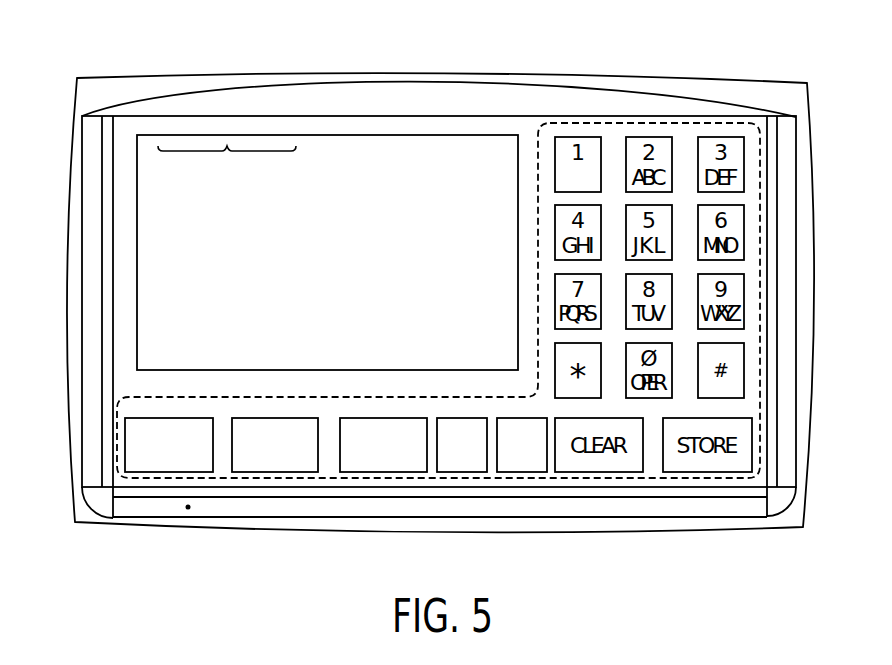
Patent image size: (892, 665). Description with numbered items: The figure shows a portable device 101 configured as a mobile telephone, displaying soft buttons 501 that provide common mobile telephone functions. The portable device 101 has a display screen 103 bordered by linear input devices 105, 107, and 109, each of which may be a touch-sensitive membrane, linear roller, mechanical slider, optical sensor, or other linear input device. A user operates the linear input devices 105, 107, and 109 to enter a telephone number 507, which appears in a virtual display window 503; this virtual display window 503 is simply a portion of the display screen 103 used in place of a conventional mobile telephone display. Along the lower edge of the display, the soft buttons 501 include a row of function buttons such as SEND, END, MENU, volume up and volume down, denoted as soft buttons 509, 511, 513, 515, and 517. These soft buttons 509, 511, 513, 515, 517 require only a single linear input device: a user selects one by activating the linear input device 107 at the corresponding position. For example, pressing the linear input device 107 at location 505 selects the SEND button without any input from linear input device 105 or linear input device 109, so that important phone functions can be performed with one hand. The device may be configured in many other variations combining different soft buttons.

The portable device 101 is at (633, 98).
The display screen 103 is at (125, 382).
The linear input device 105 is at (95, 258).
The linear input device 107 is at (342, 508).
The linear input device 109 is at (786, 343).
The soft buttons 501 is at (600, 482).
The virtual display window 503 is at (135, 193).
The location 505 is at (188, 507).
The telephone number 507 is at (227, 146).
The soft button 509 is at (150, 472).
The soft button 511 is at (302, 472).
The soft button 513 is at (392, 472).
The soft button 515 is at (467, 472).
The soft button 517 is at (525, 472).